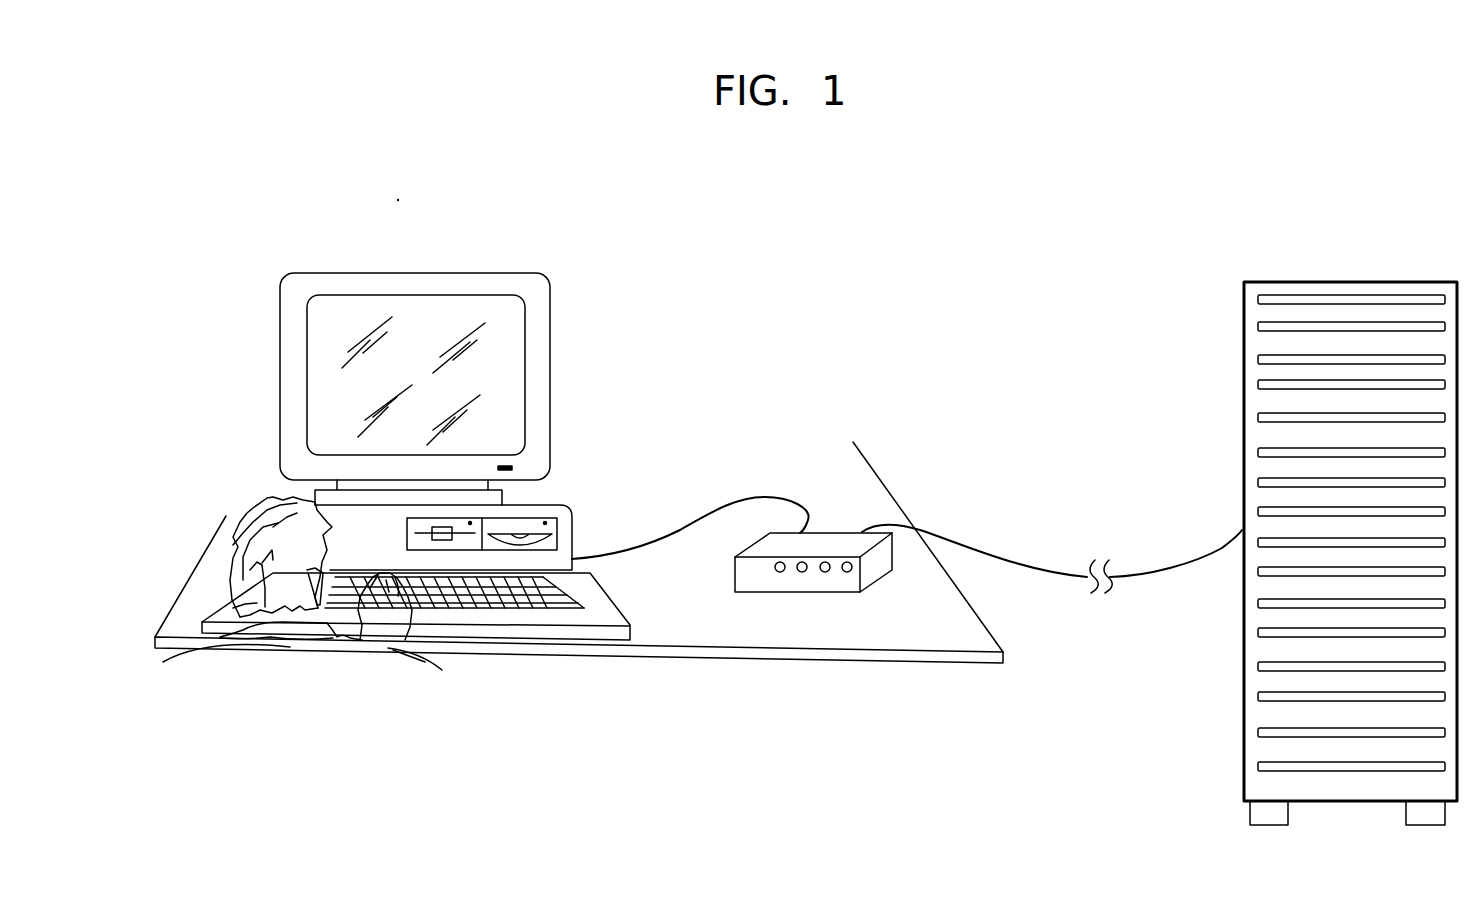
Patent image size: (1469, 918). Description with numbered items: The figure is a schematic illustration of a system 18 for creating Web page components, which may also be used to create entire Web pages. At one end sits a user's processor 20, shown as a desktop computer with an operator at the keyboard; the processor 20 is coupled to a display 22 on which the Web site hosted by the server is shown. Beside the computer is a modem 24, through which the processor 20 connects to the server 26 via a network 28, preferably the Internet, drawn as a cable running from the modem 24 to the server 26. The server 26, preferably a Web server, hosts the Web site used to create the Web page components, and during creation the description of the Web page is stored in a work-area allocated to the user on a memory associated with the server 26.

The system 18 is at (1168, 198).
The processor 20 is at (560, 503).
The display 22 is at (500, 393).
The modem 24 is at (817, 583).
The server 26 is at (1375, 285).
The network 28 is at (1018, 568).